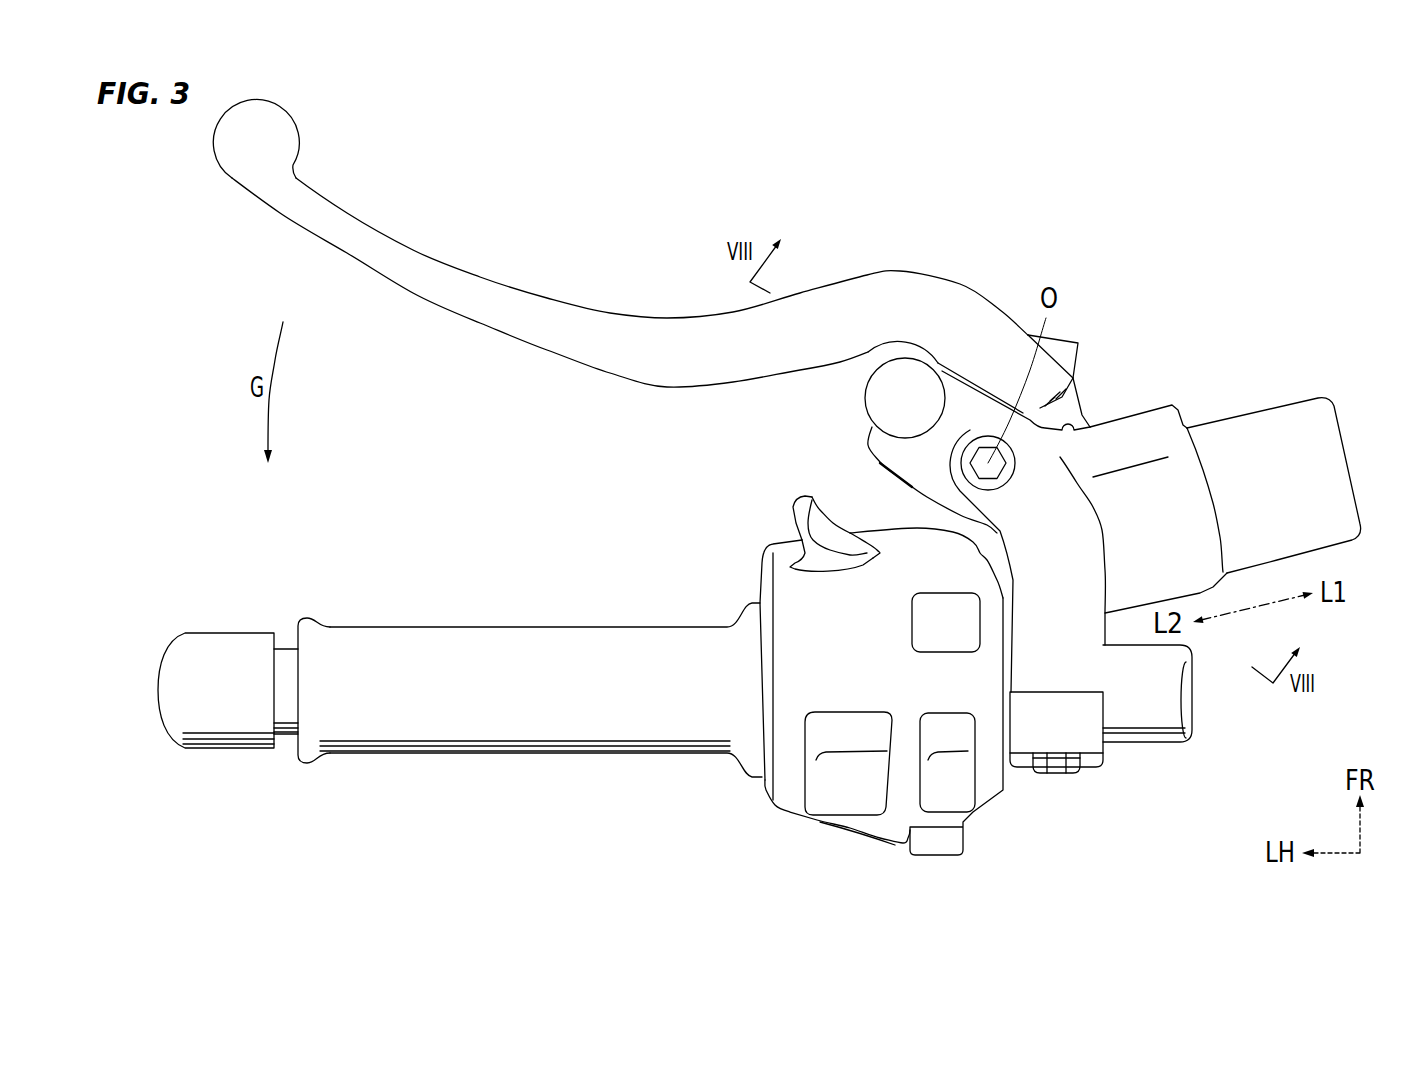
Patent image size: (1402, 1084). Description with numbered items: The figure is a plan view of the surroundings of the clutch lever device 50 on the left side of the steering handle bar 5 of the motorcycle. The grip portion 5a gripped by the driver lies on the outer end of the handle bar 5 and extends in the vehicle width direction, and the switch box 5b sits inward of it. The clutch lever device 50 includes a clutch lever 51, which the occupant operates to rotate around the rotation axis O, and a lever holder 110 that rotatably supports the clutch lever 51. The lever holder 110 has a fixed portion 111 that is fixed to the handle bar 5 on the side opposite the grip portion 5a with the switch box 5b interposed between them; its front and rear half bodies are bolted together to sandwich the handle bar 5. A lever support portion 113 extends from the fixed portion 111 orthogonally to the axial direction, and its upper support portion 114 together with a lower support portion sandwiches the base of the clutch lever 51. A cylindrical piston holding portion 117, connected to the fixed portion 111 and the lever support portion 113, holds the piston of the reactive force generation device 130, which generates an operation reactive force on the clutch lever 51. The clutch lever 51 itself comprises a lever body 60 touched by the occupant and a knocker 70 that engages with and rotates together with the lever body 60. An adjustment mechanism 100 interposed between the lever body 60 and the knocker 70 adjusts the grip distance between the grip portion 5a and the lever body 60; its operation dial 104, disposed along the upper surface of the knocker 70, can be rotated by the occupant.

The clutch lever device 50 is at (1283, 232).
The clutch lever 51 is at (870, 270).
The lever body 60 is at (580, 320).
The knocker 70 is at (960, 402).
The adjustment mechanism 100 is at (815, 413).
The operation dial 104 is at (878, 382).
The lever holder 110 is at (1155, 390).
The fixed portion 111 is at (1057, 730).
The lever support portion 113 is at (1091, 438).
The upper support portion 114 is at (1030, 530).
The piston holding portion 117 is at (1163, 443).
The reactive force generation device 130 is at (1297, 392).
The handle bar 5 is at (1155, 717).
The grip portion 5a is at (502, 722).
The switch box 5b is at (897, 805).